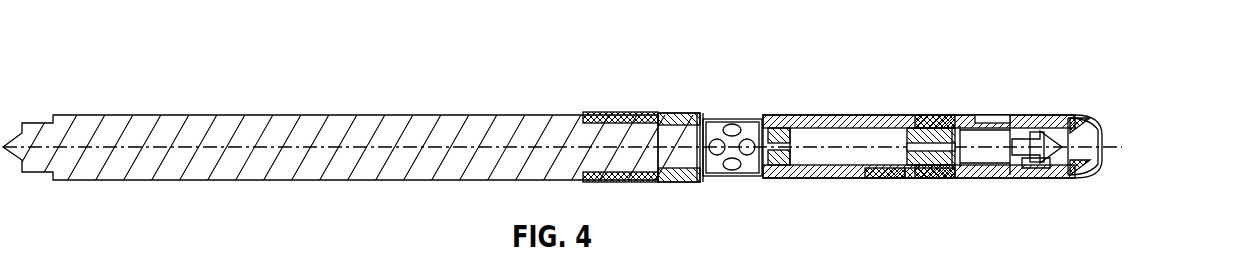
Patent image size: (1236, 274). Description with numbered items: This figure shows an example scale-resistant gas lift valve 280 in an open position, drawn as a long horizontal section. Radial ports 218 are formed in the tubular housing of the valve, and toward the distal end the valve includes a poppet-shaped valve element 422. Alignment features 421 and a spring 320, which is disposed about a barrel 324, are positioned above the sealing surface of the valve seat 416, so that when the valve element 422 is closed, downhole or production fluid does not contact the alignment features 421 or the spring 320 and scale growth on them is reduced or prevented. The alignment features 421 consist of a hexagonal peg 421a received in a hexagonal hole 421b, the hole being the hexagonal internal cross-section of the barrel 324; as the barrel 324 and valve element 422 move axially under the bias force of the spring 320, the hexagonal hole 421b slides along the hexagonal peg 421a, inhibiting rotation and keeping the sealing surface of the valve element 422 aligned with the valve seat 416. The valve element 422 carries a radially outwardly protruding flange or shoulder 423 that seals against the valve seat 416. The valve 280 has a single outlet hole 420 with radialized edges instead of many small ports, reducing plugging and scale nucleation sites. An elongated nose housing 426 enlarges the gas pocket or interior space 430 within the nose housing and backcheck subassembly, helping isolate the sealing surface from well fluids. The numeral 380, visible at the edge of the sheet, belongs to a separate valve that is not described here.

The gas lift valve 280 is at (148, 56).
The second drive shaft assembly 380 is at (167, 272).
The radial ports 218 is at (744, 127).
The outlet hole 420 is at (1114, 159).
The alignment features 421 is at (926, 143).
The hexagonal peg 421a is at (882, 180).
The hexagonal hole 421b is at (927, 172).
The spring 320 is at (957, 178).
The barrel 324 is at (968, 122).
The valve seat 416 is at (1000, 121).
The flange or shoulder 423 is at (1047, 139).
The nose housing 426 is at (1080, 118).
The valve element 422 is at (1050, 171).
The interior space 430 is at (1086, 177).